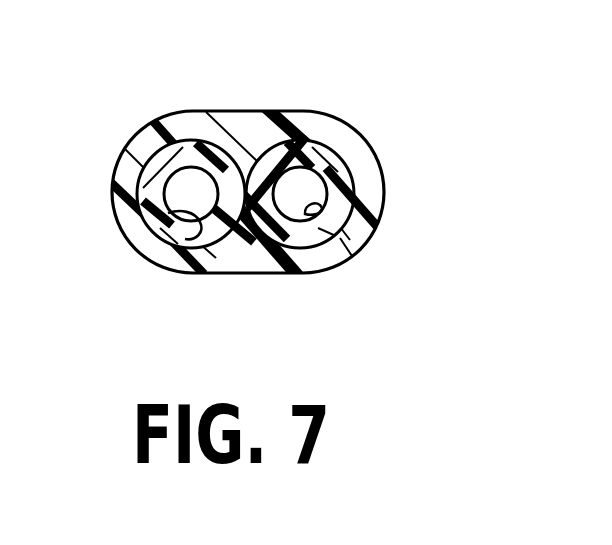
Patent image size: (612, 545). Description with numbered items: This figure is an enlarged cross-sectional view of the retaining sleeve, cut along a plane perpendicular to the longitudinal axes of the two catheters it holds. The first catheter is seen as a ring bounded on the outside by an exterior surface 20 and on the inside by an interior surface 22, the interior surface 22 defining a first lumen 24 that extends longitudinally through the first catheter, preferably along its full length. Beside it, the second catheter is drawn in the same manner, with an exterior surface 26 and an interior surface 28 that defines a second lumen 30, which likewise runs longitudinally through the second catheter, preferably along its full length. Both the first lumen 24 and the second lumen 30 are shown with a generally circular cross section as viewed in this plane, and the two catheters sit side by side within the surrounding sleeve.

The exterior surface 20 is at (337, 145).
The interior surface 22 is at (333, 254).
The first lumen 24 is at (296, 191).
The exterior surface 26 is at (217, 240).
The interior surface 28 is at (163, 256).
The second lumen 30 is at (191, 195).